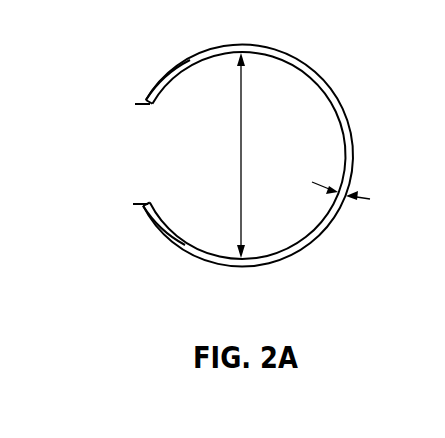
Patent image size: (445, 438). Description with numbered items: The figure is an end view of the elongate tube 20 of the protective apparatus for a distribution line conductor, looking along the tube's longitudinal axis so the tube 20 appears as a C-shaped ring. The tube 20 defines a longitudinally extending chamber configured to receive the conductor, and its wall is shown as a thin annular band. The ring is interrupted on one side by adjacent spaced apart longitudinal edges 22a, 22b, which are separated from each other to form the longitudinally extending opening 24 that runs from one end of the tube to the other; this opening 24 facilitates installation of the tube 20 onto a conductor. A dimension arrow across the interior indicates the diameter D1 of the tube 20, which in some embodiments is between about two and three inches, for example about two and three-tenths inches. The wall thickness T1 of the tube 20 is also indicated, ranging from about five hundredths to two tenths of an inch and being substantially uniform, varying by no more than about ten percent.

The tube 20 is at (299, 55).
The first longitudinal edge 22a is at (163, 73).
The second longitudinal edge 22b is at (152, 212).
The longitudinally extending opening 24 is at (143, 110).
The diameter D1 is at (243, 165).
The thickness T1 is at (370, 199).